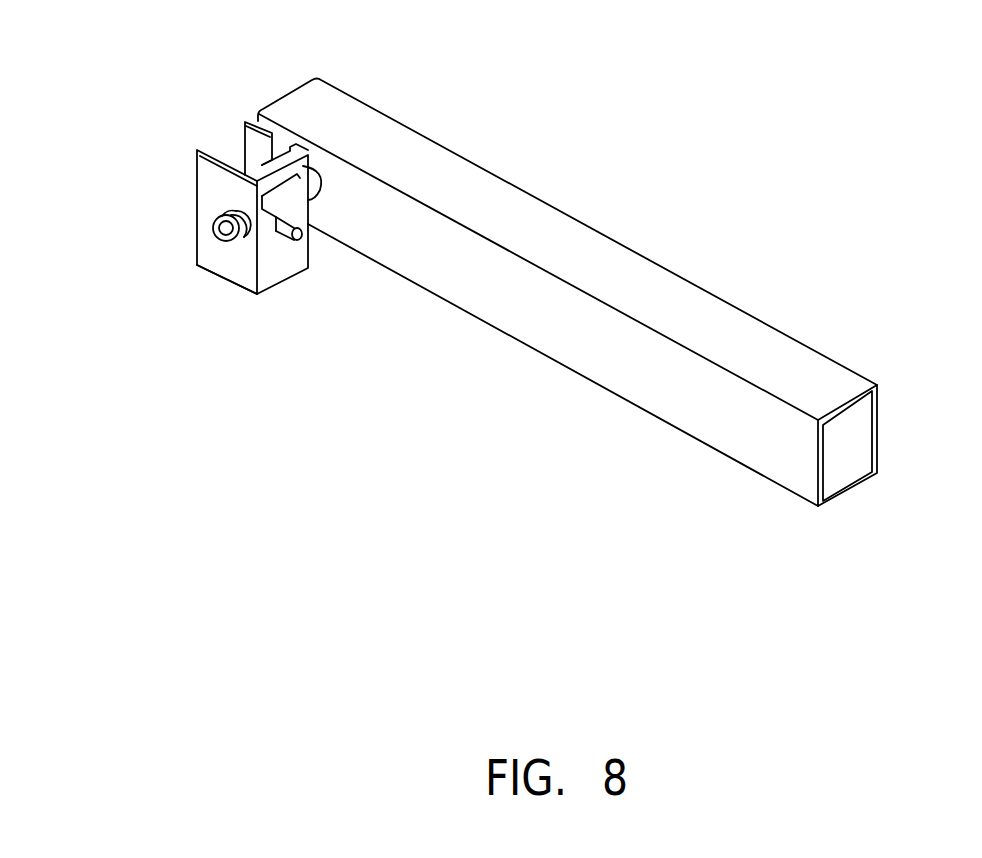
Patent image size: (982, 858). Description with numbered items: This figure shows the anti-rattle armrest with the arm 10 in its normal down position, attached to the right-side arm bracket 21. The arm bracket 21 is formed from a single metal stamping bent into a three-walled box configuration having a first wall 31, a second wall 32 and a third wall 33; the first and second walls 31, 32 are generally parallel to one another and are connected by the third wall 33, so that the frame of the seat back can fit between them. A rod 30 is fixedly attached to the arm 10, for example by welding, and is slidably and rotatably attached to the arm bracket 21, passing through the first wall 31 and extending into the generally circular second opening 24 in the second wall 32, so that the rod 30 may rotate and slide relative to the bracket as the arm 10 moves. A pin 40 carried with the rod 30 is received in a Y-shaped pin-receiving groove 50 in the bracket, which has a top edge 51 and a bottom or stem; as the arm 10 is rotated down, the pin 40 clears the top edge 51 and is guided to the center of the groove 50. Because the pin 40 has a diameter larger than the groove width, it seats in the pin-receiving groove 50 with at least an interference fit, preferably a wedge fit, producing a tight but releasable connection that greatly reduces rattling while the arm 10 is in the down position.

The arm 10 is at (453, 182).
The arm bracket 21 is at (164, 197).
The second opening 24 is at (223, 198).
The rod 30 is at (223, 230).
The first wall 31 is at (250, 138).
The second wall 32 is at (217, 270).
The third wall 33 is at (268, 287).
The pin 40 is at (295, 238).
The pin-receiving groove 50 is at (312, 205).
The top edge 51 is at (312, 205).